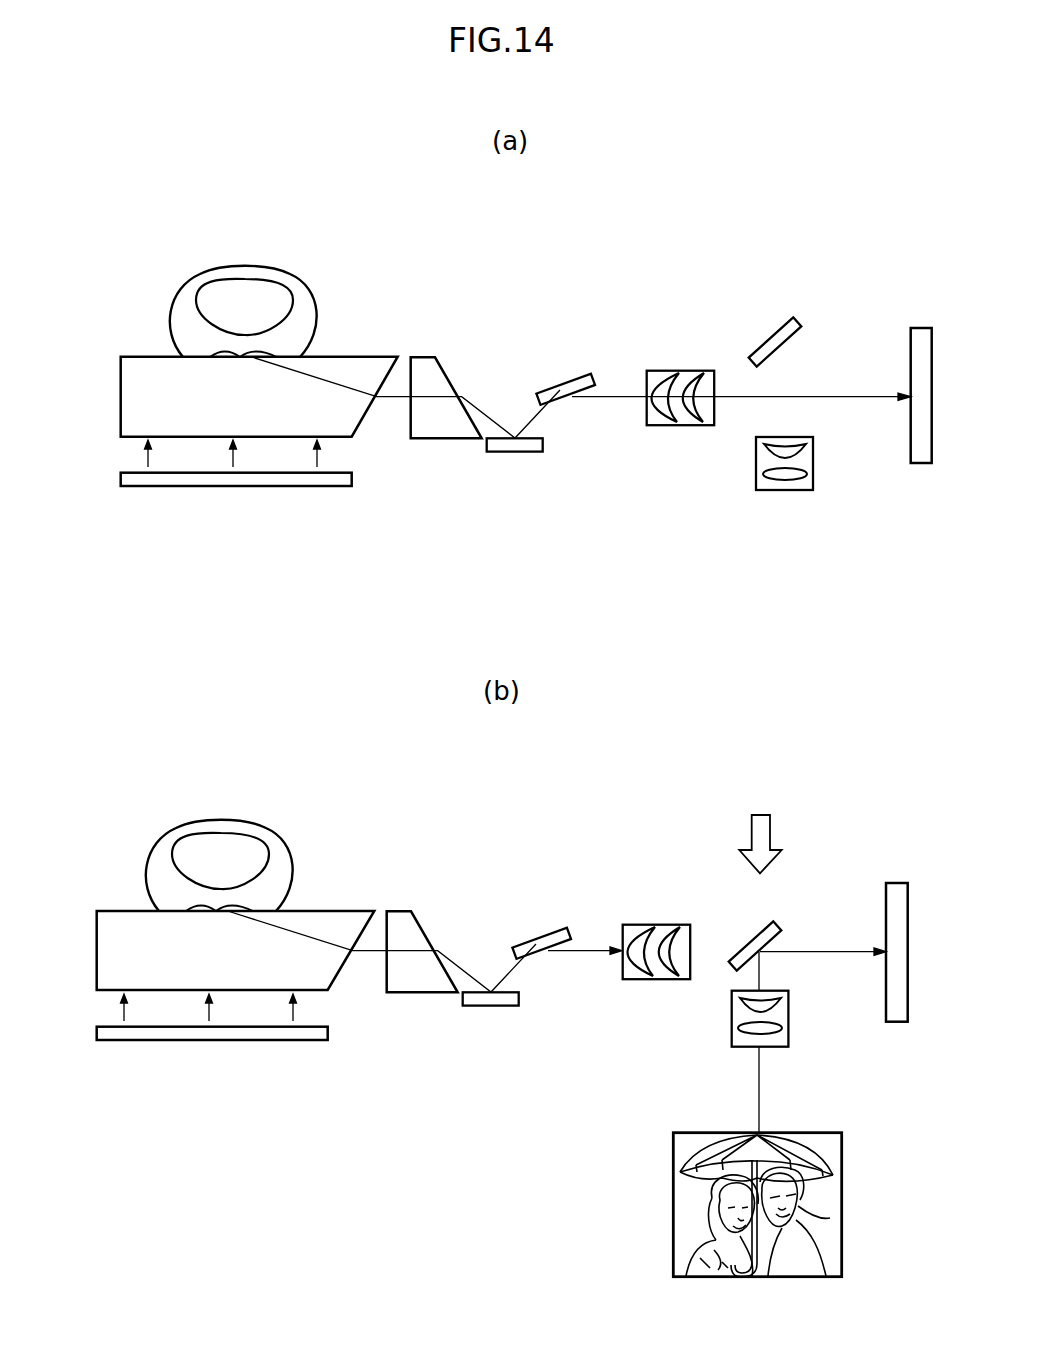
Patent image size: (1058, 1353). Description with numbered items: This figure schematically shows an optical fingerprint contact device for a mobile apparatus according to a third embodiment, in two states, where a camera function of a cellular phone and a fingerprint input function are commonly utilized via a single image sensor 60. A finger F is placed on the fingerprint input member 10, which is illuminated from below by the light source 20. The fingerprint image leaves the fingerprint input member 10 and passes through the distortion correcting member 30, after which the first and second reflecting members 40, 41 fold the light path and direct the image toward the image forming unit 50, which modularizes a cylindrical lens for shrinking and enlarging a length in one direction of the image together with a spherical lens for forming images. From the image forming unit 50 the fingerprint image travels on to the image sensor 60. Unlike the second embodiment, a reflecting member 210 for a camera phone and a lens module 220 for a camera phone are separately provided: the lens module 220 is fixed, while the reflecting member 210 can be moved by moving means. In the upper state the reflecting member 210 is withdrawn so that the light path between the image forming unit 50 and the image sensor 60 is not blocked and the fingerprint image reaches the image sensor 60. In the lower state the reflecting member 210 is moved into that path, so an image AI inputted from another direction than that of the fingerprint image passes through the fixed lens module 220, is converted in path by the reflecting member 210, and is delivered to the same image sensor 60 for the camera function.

The finger F is at (244, 268).
The fingerprint input member 10 is at (120, 393).
The light source 20 is at (233, 483).
The distortion correcting member 30 is at (428, 433).
The first reflecting member 40 is at (508, 446).
The second reflecting member 41 is at (561, 388).
The image forming unit 50 is at (672, 370).
The image sensor 60 is at (910, 345).
The reflecting member for a camera phone 210 is at (764, 340).
The lens module for a camera phone 220 is at (813, 486).
The image AI is at (672, 1207).